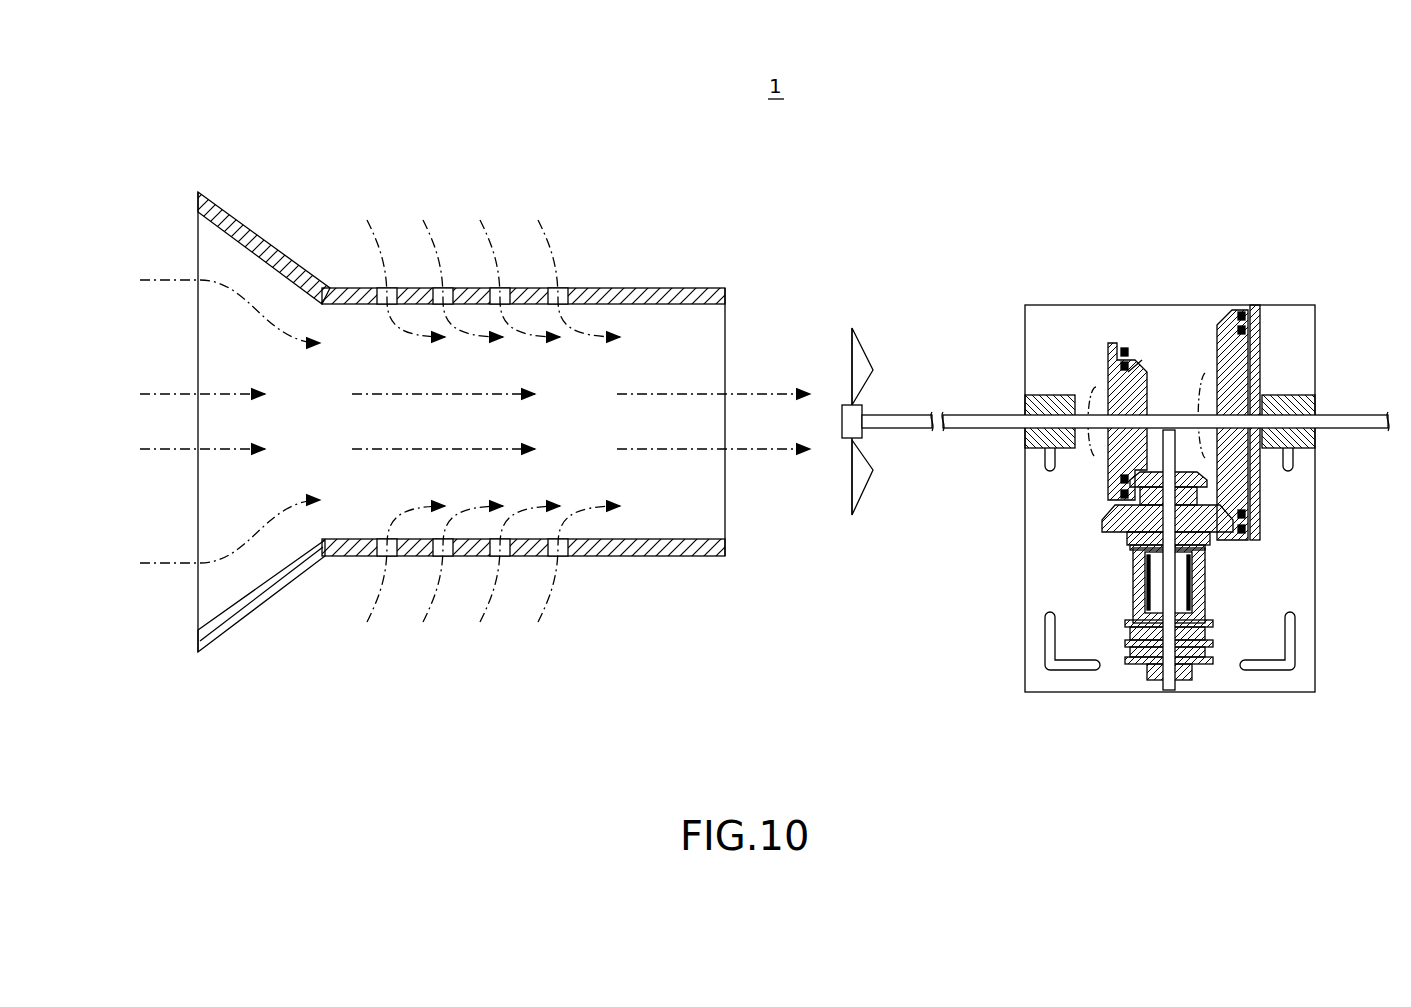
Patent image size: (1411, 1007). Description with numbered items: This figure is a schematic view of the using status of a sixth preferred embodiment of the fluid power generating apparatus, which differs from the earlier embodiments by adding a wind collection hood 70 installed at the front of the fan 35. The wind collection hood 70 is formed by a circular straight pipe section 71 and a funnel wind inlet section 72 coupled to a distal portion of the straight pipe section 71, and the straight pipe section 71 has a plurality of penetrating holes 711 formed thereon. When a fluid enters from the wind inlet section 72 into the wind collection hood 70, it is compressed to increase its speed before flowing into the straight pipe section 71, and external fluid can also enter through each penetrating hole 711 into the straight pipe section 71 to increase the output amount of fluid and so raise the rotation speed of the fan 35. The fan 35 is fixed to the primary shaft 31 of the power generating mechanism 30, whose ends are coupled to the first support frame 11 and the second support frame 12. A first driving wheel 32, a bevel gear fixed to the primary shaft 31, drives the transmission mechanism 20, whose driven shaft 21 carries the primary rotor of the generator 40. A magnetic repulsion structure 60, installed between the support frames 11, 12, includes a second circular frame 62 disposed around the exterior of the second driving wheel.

The first support frame 11 is at (1296, 388).
The second support frame 12 is at (1050, 395).
The transmission mechanism 20 is at (1122, 592).
The driven shaft 21 is at (1120, 525).
The power generating mechanism 30 is at (1217, 325).
The primary shaft 31 is at (987, 428).
The first driving wheel 32 is at (1150, 380).
The fan 35 is at (860, 357).
The generator 40 is at (1197, 585).
The magnetic repulsion structure 60 is at (1098, 372).
The second circular frame 62 is at (1262, 487).
The wind collection hood 70 is at (522, 243).
The straight pipe section 71 is at (622, 296).
The penetrating holes 711 is at (415, 298).
The wind inlet section 72 is at (263, 243).